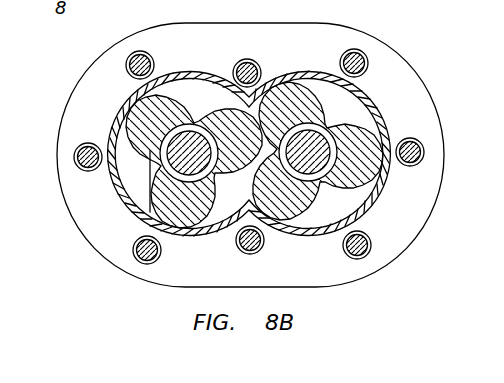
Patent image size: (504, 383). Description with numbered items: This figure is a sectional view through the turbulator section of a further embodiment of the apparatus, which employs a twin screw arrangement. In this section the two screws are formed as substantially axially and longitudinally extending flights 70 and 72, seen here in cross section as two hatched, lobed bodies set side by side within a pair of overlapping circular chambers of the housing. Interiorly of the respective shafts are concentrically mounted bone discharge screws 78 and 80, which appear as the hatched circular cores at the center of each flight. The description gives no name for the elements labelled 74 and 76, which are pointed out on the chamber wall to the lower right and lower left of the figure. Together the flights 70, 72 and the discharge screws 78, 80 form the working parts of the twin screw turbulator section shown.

The flight 70 is at (176, 106).
The flight 72 is at (305, 103).
The chamber wall liner 74 is at (359, 205).
The chamber wall liner 76 is at (113, 193).
The bone discharge screw 78 is at (150, 150).
The bone discharge screw 80 is at (332, 142).